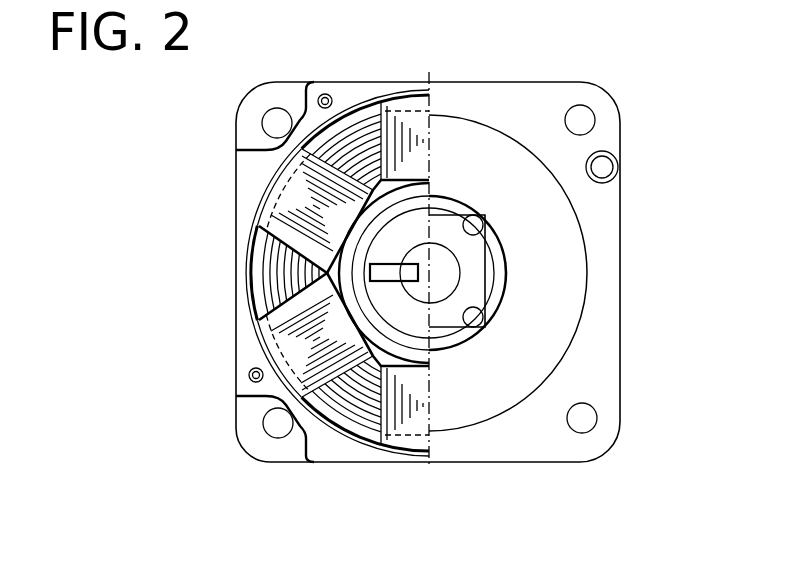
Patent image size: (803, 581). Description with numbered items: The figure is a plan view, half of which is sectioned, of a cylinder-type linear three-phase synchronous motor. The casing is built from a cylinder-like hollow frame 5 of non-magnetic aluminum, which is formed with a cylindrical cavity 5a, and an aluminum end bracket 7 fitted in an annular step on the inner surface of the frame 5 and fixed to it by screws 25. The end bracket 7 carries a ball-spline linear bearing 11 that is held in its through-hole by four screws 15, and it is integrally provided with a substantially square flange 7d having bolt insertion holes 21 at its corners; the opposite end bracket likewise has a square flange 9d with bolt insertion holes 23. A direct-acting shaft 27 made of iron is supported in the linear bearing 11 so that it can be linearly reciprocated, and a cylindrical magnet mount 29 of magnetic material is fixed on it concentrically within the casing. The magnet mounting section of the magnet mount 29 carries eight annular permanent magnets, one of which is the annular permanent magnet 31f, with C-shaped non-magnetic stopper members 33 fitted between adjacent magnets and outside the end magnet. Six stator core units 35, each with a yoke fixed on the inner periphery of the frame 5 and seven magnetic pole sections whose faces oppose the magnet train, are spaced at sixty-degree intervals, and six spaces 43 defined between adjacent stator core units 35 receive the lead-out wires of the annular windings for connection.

The frame 5 is at (360, 98).
The cavity 5a is at (342, 88).
The end bracket 7 is at (602, 225).
The flange 7d is at (583, 443).
The flange 9d is at (252, 110).
The linear bearing 11 is at (477, 292).
The screws 15 is at (473, 225).
The bolt insertion holes 21 is at (585, 112).
The bolt insertion holes 23 is at (265, 125).
The screws 25 is at (603, 165).
The direct-acting shaft 27 is at (440, 300).
The magnet mount 29 is at (398, 330).
The annular permanent magnet 31f is at (395, 395).
The stopper members 33 is at (382, 271).
The stator core units 35 is at (279, 198).
The spaces 43 is at (383, 105).